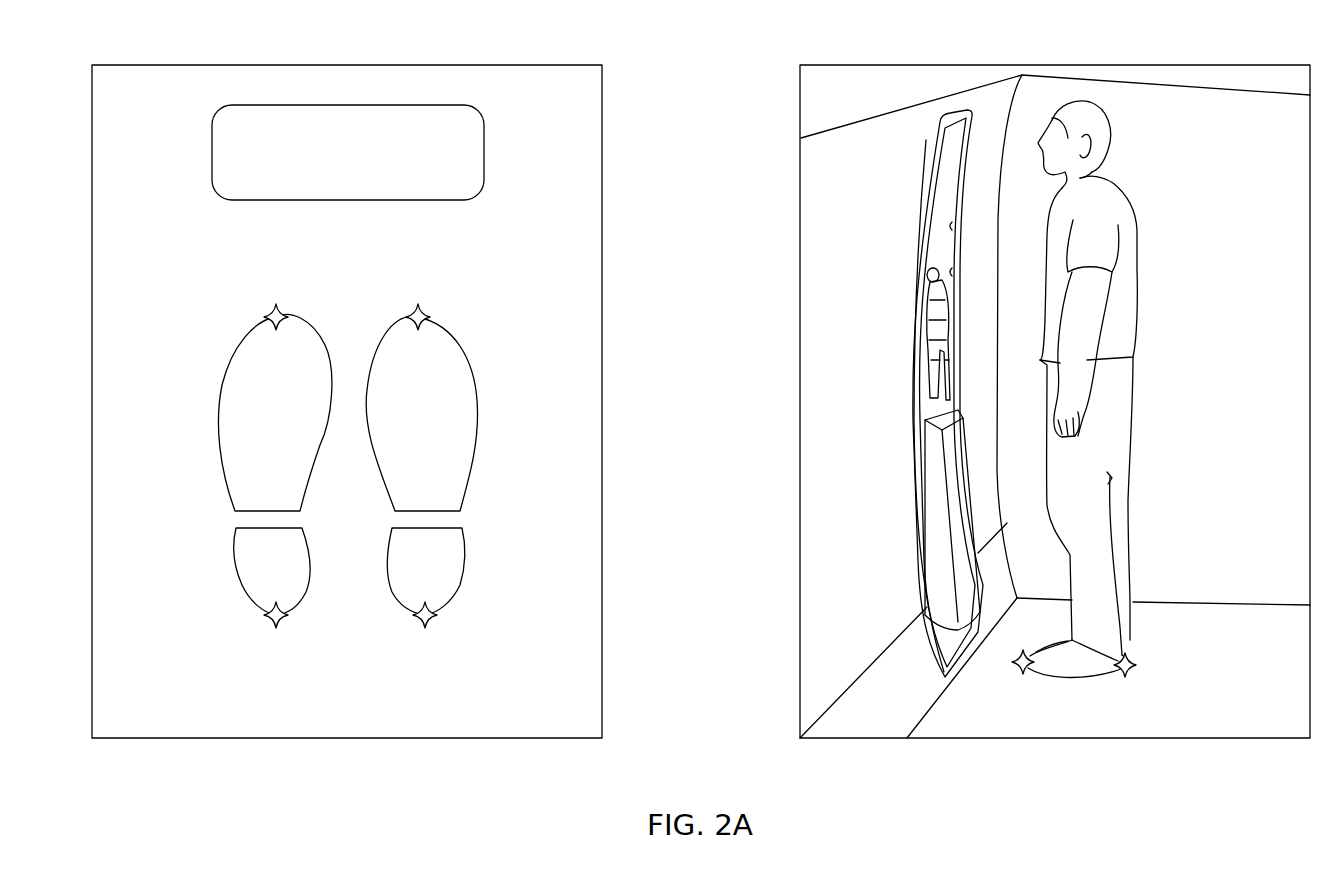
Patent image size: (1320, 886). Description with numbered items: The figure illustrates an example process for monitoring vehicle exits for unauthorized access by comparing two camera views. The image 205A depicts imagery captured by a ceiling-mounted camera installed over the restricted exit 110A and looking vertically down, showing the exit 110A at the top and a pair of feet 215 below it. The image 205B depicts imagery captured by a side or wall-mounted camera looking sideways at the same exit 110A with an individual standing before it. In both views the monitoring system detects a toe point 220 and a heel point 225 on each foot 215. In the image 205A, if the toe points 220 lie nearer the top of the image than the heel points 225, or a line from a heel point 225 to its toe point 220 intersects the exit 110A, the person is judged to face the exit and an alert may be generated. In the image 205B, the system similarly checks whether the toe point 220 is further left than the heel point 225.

The image 205A is at (453, 64).
The image 205B is at (1160, 64).
The exit 110A is at (484, 157).
The foot 215 is at (477, 403).
The toe point 220 is at (410, 308).
The heel point 225 is at (418, 623).